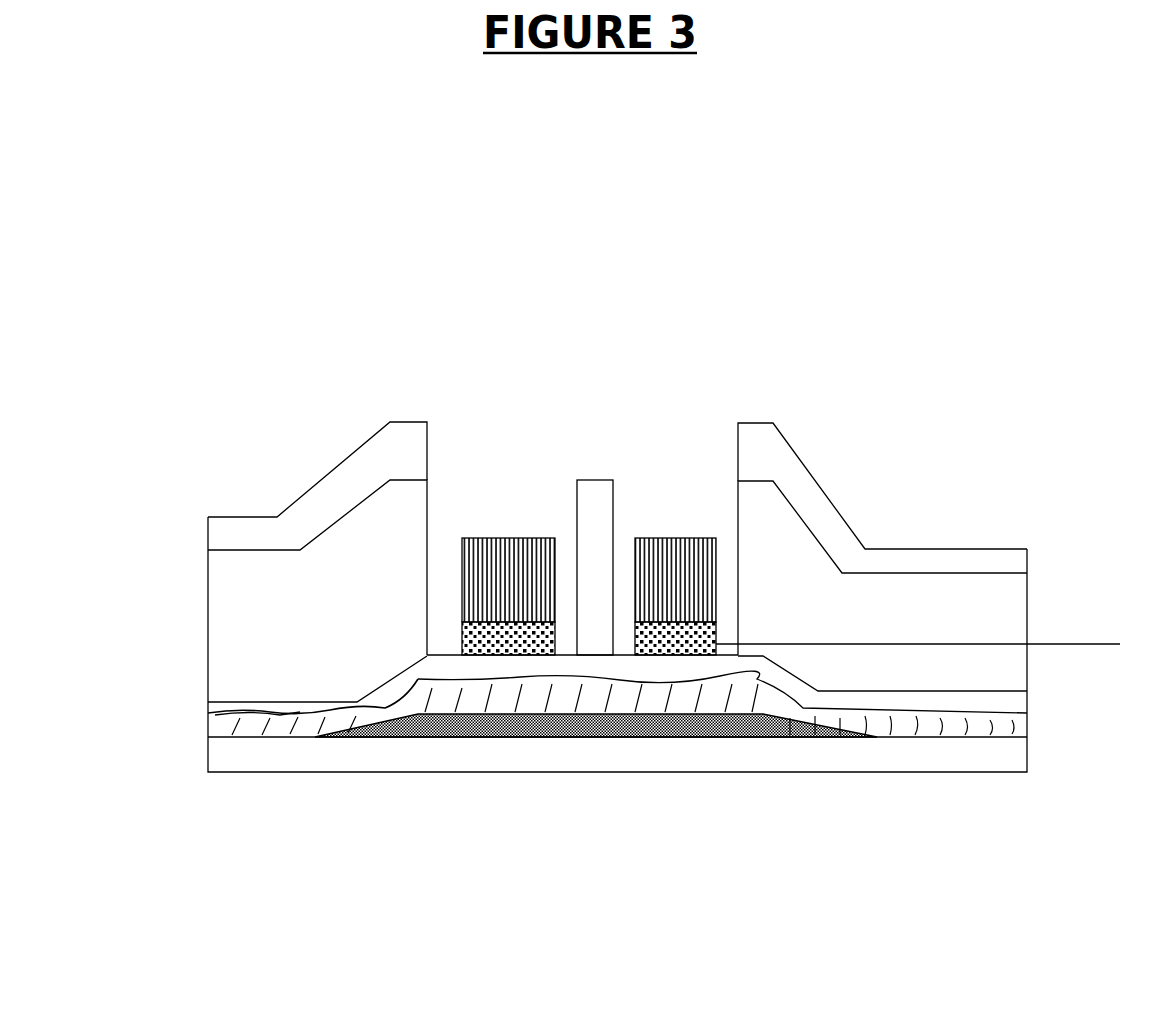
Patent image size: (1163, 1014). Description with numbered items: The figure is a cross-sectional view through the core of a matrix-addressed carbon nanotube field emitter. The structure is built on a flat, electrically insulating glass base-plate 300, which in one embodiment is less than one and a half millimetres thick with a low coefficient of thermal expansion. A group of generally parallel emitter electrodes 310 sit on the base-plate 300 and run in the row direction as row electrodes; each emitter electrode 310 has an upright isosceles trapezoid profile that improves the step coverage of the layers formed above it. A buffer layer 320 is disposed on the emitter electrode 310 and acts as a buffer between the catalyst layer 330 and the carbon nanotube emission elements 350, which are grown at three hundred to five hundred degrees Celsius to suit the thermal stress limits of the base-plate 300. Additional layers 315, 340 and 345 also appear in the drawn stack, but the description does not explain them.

The base-plate 300 is at (302, 772).
The emitter electrode 310 is at (762, 737).
The epitaxial layer 315 is at (1013, 723).
The buffer layer 320 is at (1013, 700).
The catalyst layer 330 is at (795, 649).
The interlayer dielectric 340 is at (1010, 610).
The passivation layer 345 is at (1020, 562).
The carbon nanotube emission elements 350 is at (682, 560).